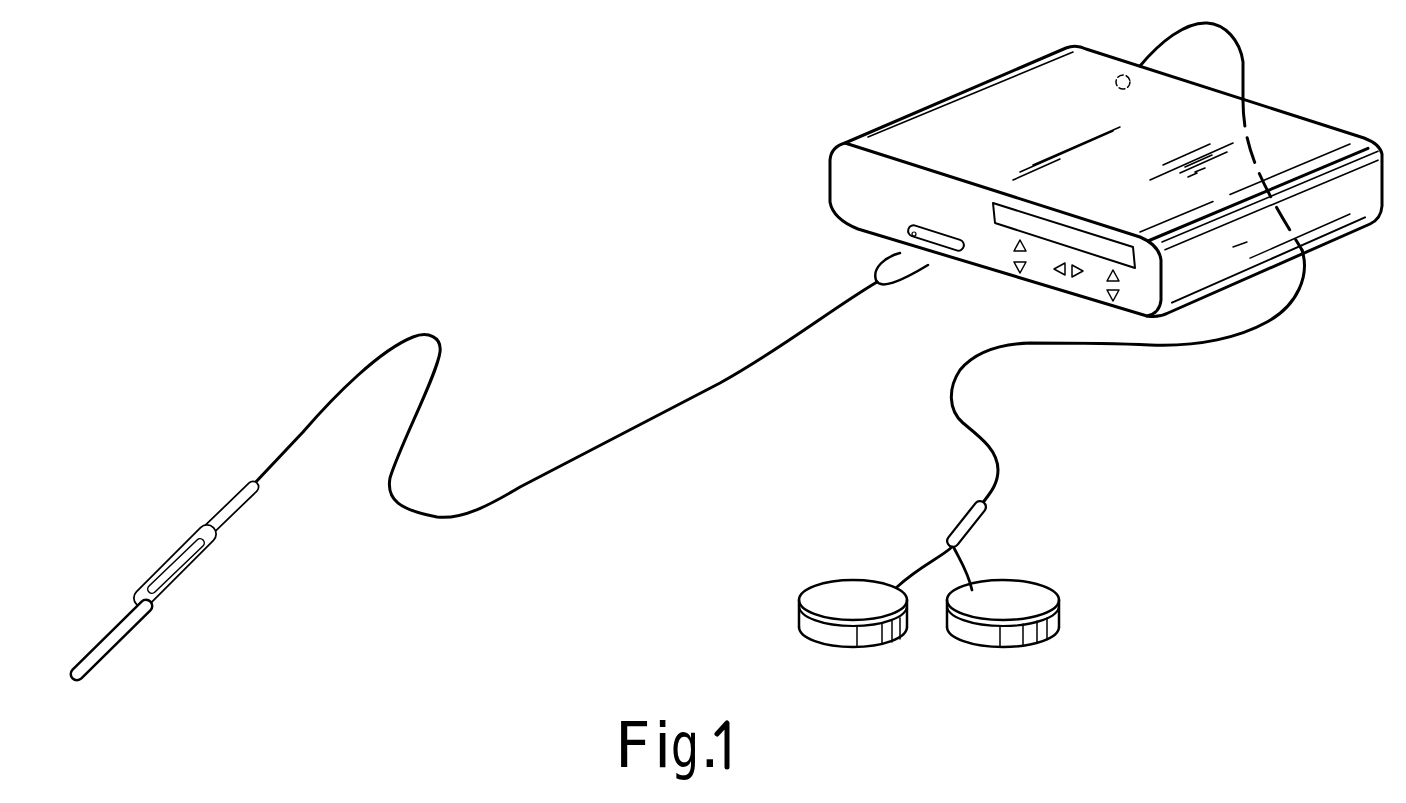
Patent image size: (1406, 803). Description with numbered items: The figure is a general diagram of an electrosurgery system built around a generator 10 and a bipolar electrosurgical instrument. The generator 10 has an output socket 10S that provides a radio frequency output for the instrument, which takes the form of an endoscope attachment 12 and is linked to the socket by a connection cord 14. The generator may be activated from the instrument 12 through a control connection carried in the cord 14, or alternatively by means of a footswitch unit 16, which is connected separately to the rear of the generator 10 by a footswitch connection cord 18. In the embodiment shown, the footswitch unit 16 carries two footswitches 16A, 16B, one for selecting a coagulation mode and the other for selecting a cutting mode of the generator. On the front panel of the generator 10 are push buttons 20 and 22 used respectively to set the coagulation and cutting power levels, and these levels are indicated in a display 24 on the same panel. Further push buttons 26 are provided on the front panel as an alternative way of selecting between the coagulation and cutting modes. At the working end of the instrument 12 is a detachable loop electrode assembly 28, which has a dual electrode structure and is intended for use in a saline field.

The generator 10 is at (886, 125).
The output socket 10S is at (908, 232).
The endoscope attachment 12 is at (193, 516).
The connection cord 14 is at (613, 438).
The footswitch unit 16 is at (894, 527).
The footswitch 16A is at (813, 631).
The footswitch 16B is at (1057, 634).
The footswitch connection cord 18 is at (1167, 349).
The push buttons 20 is at (996, 280).
The push buttons 22 is at (1110, 338).
The display 24 is at (1086, 232).
The push buttons 26 is at (1058, 293).
The loop electrode assembly 28 is at (137, 616).